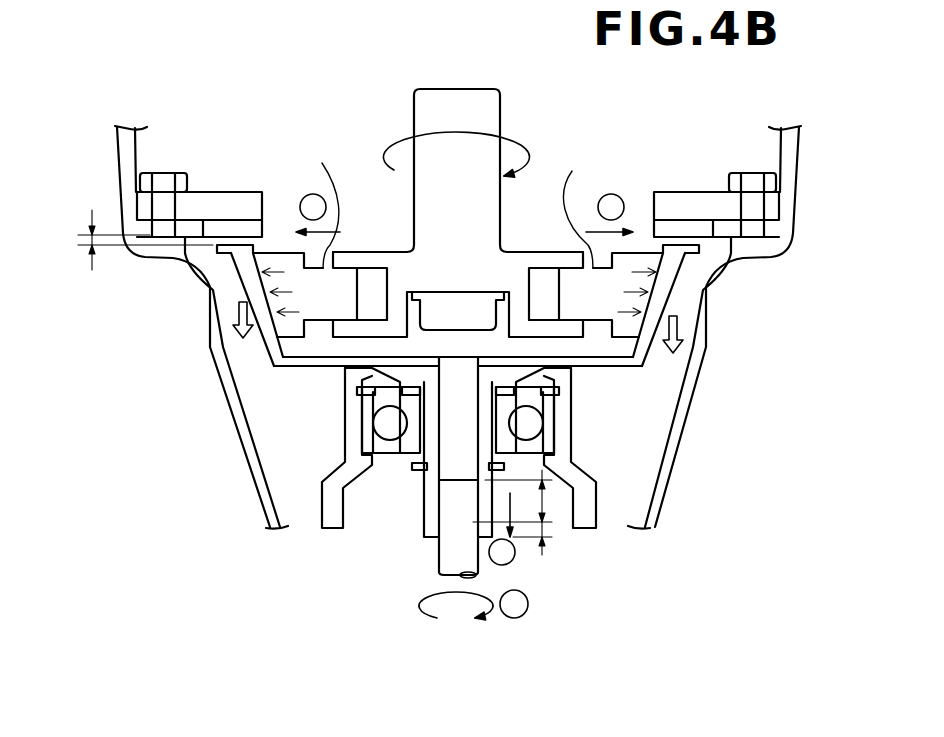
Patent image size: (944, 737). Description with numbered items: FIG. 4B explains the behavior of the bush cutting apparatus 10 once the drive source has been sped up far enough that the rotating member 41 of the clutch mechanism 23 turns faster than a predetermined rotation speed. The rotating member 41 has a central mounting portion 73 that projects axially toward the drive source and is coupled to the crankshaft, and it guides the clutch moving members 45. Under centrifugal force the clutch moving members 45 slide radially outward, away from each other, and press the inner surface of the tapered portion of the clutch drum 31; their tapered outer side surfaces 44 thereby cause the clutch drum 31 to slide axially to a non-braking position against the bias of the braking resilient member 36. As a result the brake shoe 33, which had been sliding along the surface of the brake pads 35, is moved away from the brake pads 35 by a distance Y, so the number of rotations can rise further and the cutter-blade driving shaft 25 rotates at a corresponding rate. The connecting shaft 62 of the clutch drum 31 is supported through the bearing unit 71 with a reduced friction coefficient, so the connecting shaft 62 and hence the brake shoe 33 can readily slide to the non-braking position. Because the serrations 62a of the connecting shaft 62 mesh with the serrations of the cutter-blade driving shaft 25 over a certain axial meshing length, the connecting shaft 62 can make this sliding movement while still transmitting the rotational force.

The bush cutting apparatus 10 is at (174, 92).
The rotating member 41 is at (404, 125).
The clutch mechanism 23 is at (359, 215).
The clutch moving members 45 is at (445, 201).
The brake pads 35 is at (263, 232).
The brake shoe 33 is at (256, 275).
The tapered outer side surface 44 is at (262, 282).
The clutch drum 31 is at (275, 390).
The braking resilient member 36 is at (360, 413).
The bearing unit 71 is at (404, 450).
The central mounting portion 73 is at (421, 522).
The connecting shaft 62 is at (437, 563).
The serrations 62a is at (482, 432).
The cutter-blade driving shaft 25 is at (432, 571).